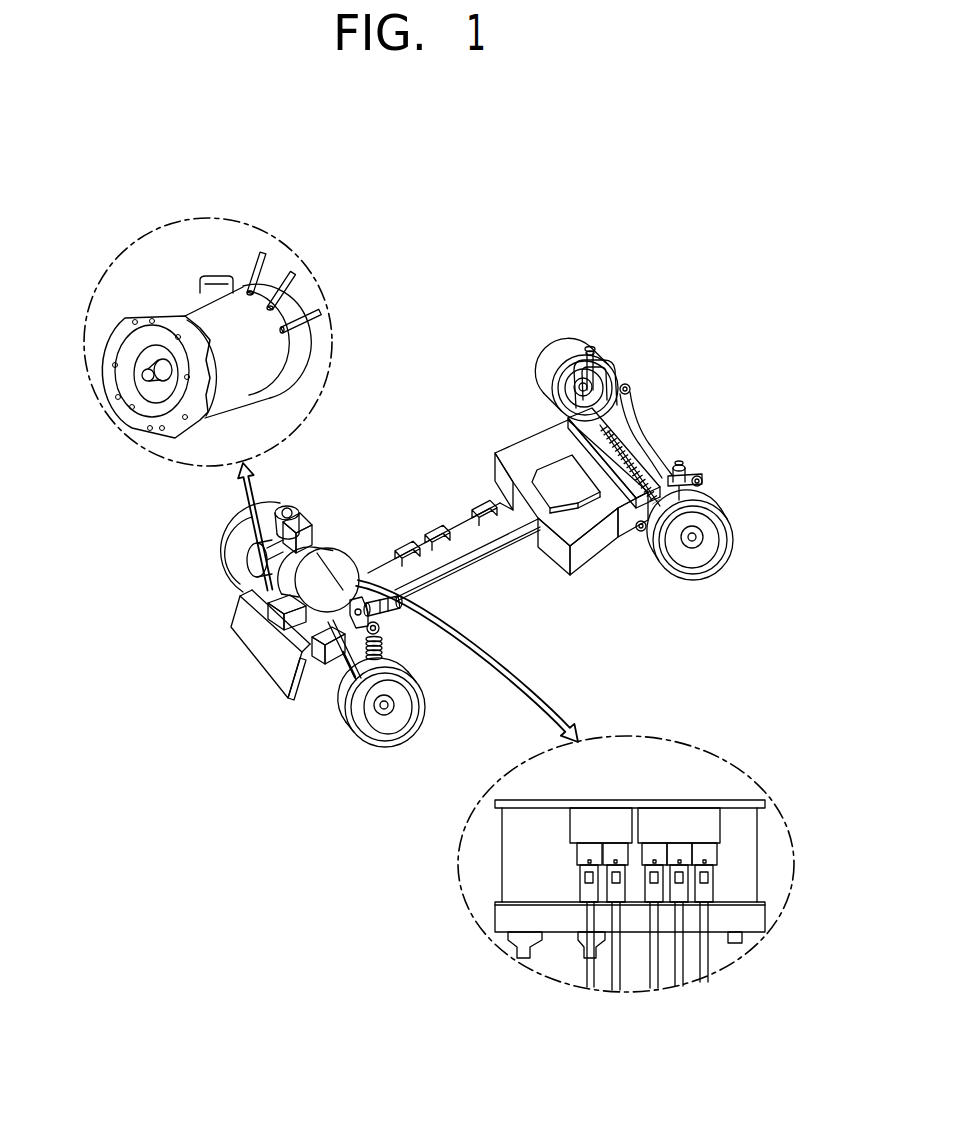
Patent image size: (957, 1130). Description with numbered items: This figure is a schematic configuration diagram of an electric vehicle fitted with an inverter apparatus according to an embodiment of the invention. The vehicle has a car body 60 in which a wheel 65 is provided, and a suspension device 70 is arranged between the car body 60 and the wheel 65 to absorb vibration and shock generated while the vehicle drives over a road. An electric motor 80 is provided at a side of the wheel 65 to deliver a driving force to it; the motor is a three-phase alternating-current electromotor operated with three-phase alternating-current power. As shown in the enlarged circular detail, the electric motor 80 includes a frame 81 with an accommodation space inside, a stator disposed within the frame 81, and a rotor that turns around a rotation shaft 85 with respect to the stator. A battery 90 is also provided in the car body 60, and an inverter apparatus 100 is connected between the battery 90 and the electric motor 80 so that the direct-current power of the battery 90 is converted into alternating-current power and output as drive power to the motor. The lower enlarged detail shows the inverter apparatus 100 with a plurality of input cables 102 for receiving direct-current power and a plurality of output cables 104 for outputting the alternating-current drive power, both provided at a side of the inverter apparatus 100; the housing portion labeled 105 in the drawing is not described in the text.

The car body 60 is at (648, 420).
The wheel 65 is at (568, 352).
The suspension device 70 is at (703, 465).
The electric motor 80 is at (108, 250).
The frame 81 is at (195, 310).
The rotation shaft 85 is at (142, 375).
The battery 90 is at (513, 428).
The inverter apparatus 100 is at (323, 587).
The input cables 102 is at (590, 988).
The output cables 104 is at (654, 988).
The connector housing 105 is at (745, 857).